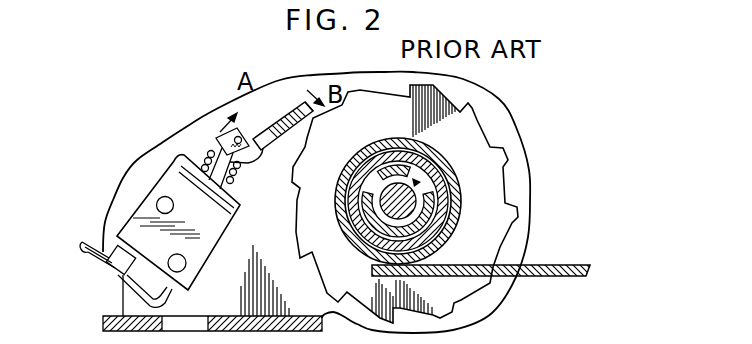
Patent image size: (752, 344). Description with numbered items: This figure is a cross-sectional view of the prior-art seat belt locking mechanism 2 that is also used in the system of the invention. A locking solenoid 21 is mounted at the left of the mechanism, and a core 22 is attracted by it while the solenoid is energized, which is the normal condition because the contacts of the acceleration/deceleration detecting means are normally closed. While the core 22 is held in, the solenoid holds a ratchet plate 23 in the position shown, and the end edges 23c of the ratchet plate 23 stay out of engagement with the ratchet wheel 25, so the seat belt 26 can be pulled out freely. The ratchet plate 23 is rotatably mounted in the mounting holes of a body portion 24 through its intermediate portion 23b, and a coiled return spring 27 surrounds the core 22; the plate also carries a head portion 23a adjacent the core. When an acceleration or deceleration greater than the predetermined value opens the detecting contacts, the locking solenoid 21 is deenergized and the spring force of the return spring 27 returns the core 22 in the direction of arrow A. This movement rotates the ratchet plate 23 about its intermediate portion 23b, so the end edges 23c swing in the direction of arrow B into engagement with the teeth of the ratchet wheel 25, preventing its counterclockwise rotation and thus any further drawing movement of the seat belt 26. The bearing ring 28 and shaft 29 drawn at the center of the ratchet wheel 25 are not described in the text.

The seat belt locking mechanism 2 is at (141, 150).
The locking solenoid 21 is at (165, 185).
The core 22 is at (242, 194).
The ratchet plate 23 is at (280, 130).
The lever head plate 23a is at (220, 135).
The intermediate portion 23b is at (281, 150).
The end edges 23c is at (299, 104).
The body portion 24 is at (228, 115).
The ratchet wheel 25 is at (465, 125).
The seat belt 26 is at (565, 265).
The coiled return spring 27 is at (203, 150).
The bearing ring 28 is at (442, 171).
The shaft 29 is at (425, 201).